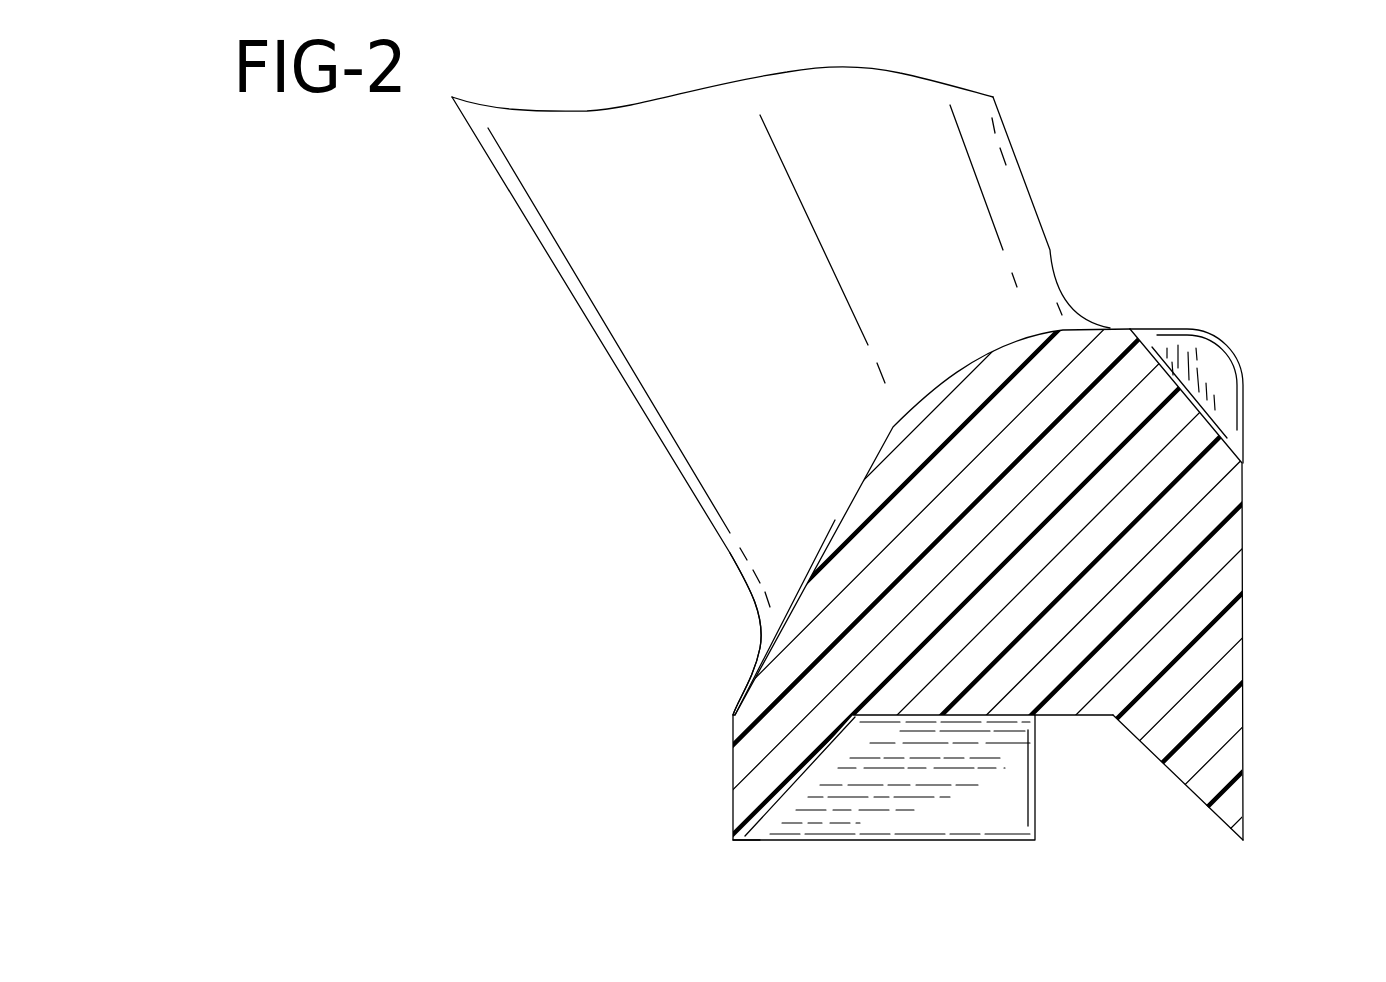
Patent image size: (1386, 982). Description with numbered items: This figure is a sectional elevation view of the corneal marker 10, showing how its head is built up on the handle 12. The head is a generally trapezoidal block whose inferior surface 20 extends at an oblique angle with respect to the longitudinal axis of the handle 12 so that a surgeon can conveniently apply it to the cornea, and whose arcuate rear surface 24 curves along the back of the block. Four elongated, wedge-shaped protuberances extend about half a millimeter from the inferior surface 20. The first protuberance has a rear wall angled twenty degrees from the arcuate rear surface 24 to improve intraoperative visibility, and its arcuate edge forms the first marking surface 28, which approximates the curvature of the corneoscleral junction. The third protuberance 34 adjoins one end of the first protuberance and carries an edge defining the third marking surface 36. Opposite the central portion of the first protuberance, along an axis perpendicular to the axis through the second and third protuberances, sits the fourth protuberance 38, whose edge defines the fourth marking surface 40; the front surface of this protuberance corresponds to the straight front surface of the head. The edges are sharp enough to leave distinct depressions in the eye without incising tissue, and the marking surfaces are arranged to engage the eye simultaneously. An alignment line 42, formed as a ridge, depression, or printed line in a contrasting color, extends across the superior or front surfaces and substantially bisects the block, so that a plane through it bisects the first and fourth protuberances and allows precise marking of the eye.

The marker 10 is at (860, 604).
The handle 12 is at (1052, 211).
The inferior surface 20 is at (1088, 718).
The arcuate rear surface 24 is at (833, 530).
The first marking surface 28 is at (733, 840).
The third protuberance 34 is at (937, 802).
The third marking surface 36 is at (995, 843).
The fourth protuberance 38 is at (1243, 660).
The fourth marking surface 40 is at (1243, 838).
The alignment line 42 is at (1212, 367).